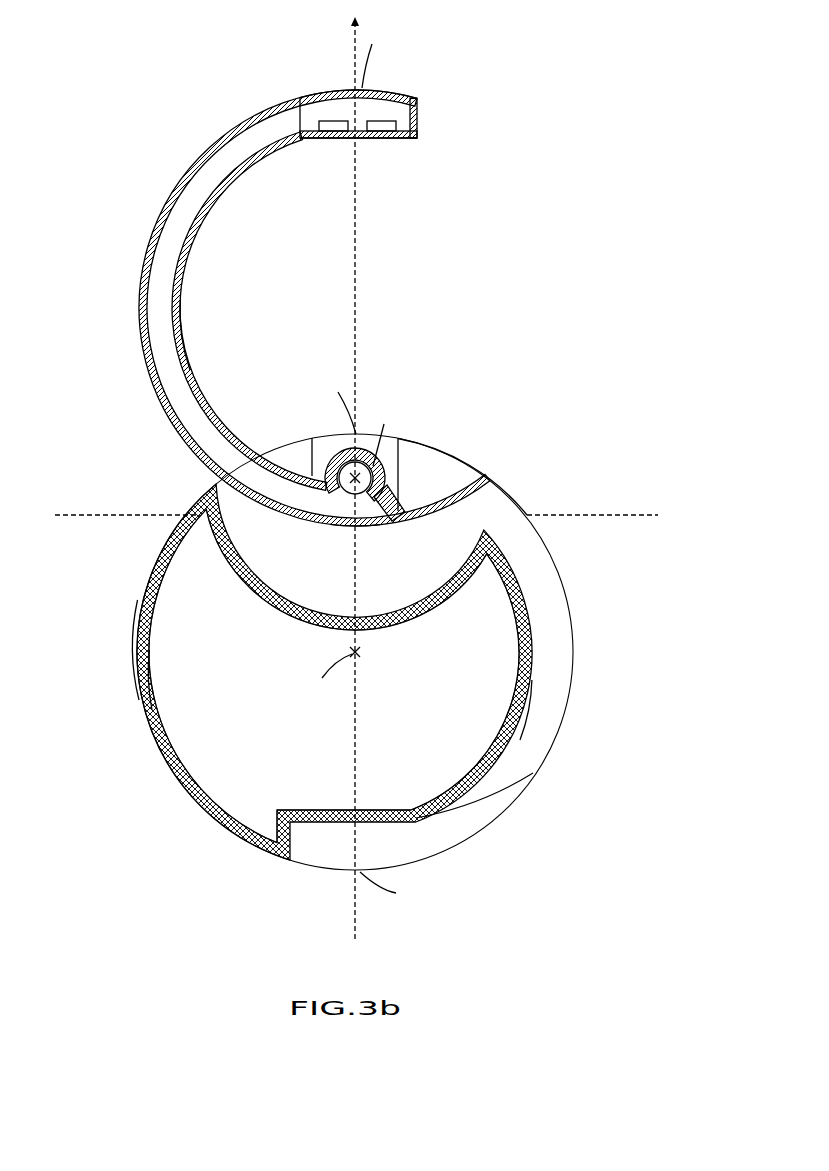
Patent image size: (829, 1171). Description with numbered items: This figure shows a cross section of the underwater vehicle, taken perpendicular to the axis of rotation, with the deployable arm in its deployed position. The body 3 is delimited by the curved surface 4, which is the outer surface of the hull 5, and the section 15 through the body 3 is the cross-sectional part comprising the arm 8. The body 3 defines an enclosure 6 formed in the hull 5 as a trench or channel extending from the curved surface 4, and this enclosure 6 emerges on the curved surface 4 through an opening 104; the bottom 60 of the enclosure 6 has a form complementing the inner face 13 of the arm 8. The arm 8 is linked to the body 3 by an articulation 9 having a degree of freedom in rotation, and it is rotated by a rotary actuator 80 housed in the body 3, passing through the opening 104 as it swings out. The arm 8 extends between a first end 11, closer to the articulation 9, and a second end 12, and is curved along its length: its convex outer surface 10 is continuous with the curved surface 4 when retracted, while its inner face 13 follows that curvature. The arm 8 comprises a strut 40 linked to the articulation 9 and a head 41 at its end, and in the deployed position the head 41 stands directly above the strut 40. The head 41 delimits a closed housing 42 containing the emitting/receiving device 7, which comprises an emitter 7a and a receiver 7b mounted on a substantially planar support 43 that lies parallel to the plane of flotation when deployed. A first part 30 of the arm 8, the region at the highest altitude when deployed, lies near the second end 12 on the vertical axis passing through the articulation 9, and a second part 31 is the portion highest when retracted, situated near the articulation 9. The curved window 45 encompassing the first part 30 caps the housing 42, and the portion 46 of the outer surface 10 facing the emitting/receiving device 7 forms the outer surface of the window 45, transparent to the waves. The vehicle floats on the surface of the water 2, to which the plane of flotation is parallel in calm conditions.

The surface of the water 2 is at (592, 510).
The body 3 is at (108, 755).
The curved surface 4 is at (134, 611).
The hull 5 is at (138, 680).
The enclosure 6 is at (556, 686).
The emitting/receiving device 7 is at (391, 113).
The emitter 7a is at (394, 120).
The receiver 7b is at (328, 133).
The arm 8 is at (232, 396).
The articulation 9 is at (343, 468).
The outer surface 10 is at (146, 221).
The first end 11 is at (490, 480).
The second end 12 is at (416, 100).
The inner face 13 is at (199, 229).
The section 15 is at (280, 741).
The first part 30 is at (356, 86).
The second part 31 is at (358, 529).
The strut 40 is at (137, 314).
The head 41 is at (368, 154).
The closed housing 42 is at (330, 110).
The support 43 is at (377, 136).
The window 45 is at (374, 92).
The portion of the outer surface 46 is at (324, 85).
The bottom 60 is at (515, 725).
The rotary actuator 80 is at (403, 462).
The opening 104 is at (574, 625).